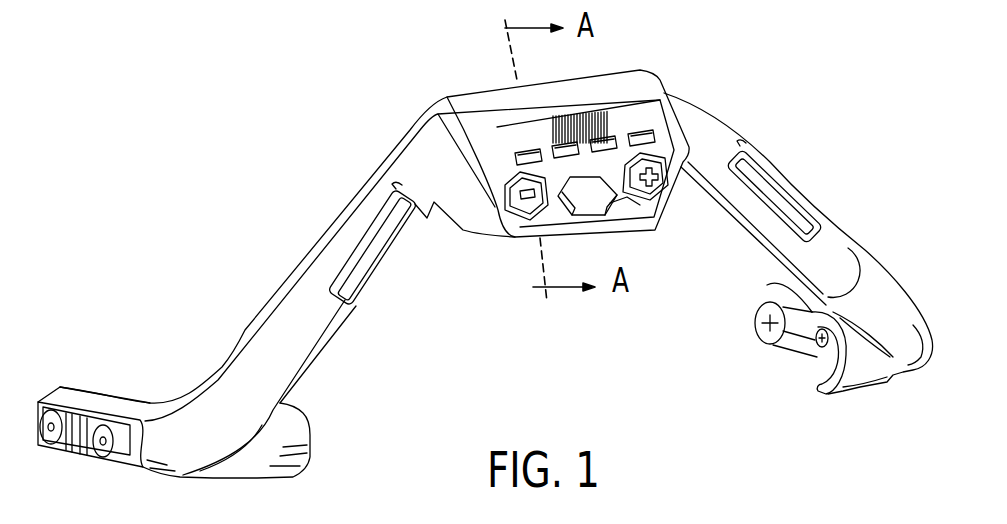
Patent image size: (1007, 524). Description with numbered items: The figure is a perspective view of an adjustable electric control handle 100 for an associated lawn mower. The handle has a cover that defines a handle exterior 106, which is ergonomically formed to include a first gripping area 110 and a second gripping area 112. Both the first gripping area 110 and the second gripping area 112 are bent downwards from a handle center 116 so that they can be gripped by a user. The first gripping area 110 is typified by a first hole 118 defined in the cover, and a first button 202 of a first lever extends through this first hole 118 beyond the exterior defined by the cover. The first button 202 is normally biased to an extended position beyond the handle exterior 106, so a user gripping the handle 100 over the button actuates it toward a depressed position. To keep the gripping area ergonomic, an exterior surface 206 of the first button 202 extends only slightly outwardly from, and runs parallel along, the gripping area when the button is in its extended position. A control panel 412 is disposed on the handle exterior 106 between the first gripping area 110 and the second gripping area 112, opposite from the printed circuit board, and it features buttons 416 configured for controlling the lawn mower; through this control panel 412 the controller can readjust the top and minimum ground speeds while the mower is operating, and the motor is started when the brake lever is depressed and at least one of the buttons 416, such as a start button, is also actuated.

The adjustable electric control handle 100 is at (150, 198).
The handle exterior 106 is at (305, 333).
The first gripping area 110 is at (300, 233).
The second gripping area 112 is at (842, 189).
The handle center 116 is at (645, 251).
The first hole 118 is at (392, 197).
The first button 202 is at (375, 240).
The exterior surface of the first button 206 is at (407, 228).
The control panel 412 is at (627, 197).
The buttons 416 is at (583, 190).